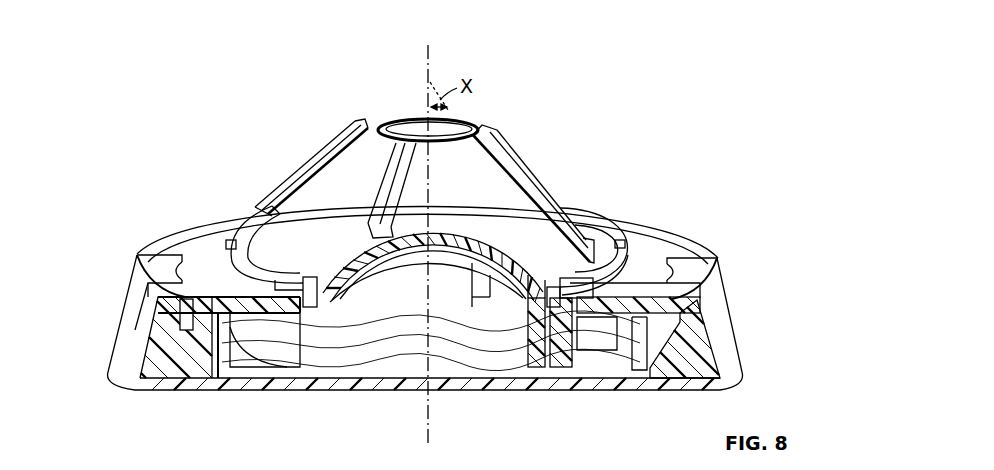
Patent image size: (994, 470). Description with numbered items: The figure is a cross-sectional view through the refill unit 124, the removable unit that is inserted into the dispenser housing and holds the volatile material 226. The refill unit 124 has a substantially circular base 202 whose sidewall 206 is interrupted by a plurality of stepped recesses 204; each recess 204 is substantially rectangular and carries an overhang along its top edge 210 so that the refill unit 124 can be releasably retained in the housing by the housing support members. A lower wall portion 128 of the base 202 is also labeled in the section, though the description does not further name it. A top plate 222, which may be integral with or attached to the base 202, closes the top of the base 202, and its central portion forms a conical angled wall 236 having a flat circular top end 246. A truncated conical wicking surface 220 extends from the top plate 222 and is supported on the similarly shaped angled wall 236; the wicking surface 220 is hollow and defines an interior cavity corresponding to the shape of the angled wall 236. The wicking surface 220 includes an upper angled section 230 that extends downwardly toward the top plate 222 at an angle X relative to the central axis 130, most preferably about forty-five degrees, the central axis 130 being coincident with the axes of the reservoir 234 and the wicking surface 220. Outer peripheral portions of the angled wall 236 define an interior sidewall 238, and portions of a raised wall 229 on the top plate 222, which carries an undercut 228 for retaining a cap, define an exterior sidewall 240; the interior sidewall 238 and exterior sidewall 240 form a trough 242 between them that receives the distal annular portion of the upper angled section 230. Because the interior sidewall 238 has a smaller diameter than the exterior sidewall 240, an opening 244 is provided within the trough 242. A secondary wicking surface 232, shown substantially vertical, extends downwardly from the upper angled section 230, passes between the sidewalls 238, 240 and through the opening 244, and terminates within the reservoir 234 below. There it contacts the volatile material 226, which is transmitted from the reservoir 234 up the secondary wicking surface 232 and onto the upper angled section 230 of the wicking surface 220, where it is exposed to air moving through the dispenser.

The refill unit 124 is at (193, 80).
The central axis 130 is at (437, 58).
The truncated conical wicking surface 220 is at (474, 124).
The opening 244 is at (418, 127).
The secondary wicking surface 232 is at (546, 368).
The flat circular top end 246 is at (335, 147).
The upper angled section 230 is at (478, 162).
The top plate 222 is at (193, 238).
The raised wall 229 is at (607, 232).
The undercut 228 is at (652, 270).
The top edge 210 is at (136, 258).
The stepped recess 204 is at (136, 268).
The sidewall 206 is at (725, 333).
The base wall 128 is at (190, 372).
The base 202 is at (222, 393).
The volatile material 226 is at (315, 373).
The trough 242 is at (308, 292).
The exterior sidewall 240 is at (300, 302).
The interior sidewall 238 is at (393, 322).
The reservoir 234 is at (384, 328).
The angled wall 236 is at (470, 300).